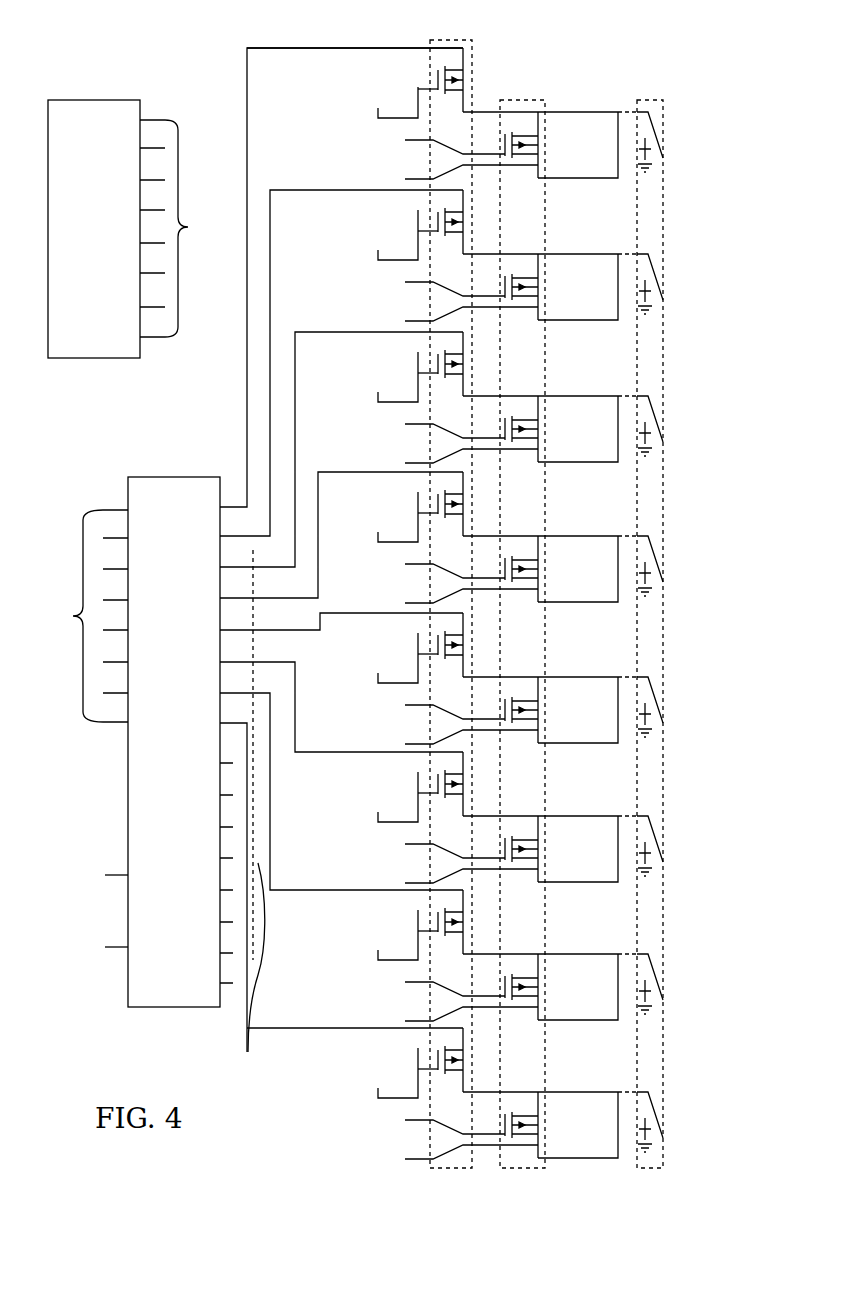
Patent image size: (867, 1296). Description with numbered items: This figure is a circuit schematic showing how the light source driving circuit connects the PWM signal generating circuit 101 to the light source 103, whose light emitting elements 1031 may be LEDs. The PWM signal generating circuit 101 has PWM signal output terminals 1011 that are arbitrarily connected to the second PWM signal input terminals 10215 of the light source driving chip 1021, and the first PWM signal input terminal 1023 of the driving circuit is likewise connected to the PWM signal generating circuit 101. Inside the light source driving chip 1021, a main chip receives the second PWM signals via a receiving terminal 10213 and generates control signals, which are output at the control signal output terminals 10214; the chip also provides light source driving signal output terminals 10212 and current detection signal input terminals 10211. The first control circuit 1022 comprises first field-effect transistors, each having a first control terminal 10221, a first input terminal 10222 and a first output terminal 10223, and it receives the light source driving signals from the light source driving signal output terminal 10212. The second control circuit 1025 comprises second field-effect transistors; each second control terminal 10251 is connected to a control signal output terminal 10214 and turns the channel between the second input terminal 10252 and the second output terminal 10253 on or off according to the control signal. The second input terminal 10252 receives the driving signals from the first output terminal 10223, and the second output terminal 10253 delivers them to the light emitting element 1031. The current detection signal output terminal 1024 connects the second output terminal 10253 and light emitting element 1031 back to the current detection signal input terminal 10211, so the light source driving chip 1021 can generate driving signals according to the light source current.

The PWM signal generating circuit 101 is at (68, 97).
The PWM signal output terminal 1011 is at (188, 227).
The light source driving chip 1021 is at (137, 477).
The current detection signal input terminal 10211 is at (70, 616).
The light source driving signal output terminal 10212 is at (262, 560).
The receiving terminal 10213 is at (107, 873).
The control signal output terminal 10214 is at (247, 1052).
The second PWM signal input terminal 10215 is at (108, 946).
The first control circuit 1022 is at (430, 42).
The first control terminal 10221 is at (399, 566).
The first input terminal 10222 is at (527, 556).
The first output terminal 10223 is at (463, 46).
The first PWM signal input terminal 1023 is at (376, 62).
The current detection signal output terminal 1024 is at (446, 666).
The second control circuit 1025 is at (540, 95).
The second control terminal 10251 is at (429, 631).
The second input terminal 10252 is at (559, 626).
The second output terminal 10253 is at (541, 108).
The light source 103 is at (663, 120).
The light emitting element 1031 is at (661, 100).